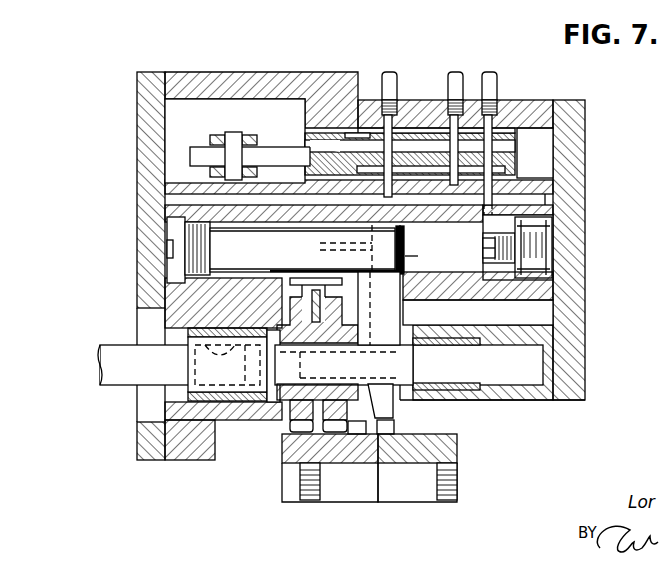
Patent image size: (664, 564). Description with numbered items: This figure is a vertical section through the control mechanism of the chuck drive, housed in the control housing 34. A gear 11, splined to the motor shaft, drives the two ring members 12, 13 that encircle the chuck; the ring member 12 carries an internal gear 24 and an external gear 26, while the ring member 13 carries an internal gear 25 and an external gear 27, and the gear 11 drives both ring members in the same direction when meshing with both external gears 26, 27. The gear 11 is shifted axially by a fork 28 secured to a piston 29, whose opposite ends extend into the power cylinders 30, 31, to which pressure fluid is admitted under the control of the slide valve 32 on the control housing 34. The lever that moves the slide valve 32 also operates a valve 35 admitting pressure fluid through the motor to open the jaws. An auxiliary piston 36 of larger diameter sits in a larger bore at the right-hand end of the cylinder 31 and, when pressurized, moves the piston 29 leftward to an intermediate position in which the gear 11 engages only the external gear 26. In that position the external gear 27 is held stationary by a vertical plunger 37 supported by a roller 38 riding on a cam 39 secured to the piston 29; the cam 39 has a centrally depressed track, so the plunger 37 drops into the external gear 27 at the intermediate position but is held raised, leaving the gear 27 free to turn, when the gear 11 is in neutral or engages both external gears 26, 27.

The gear 11 is at (290, 426).
The ring member 12 is at (283, 454).
The ring member 13 is at (459, 448).
The internal gear 24 is at (308, 502).
The internal gear 25 is at (450, 497).
The external gear 26 is at (358, 426).
The external gear 27 is at (396, 428).
The fork 28 is at (300, 276).
The piston 29 is at (418, 256).
The power cylinder 30 is at (207, 236).
The power cylinder 31 is at (461, 272).
The slide valve 32 is at (523, 128).
The control housing 34 is at (199, 72).
The valve 35 is at (417, 130).
The auxiliary piston 36 is at (549, 233).
The vertical plunger 37 is at (388, 392).
The roller 38 is at (410, 229).
The cam 39 is at (345, 243).